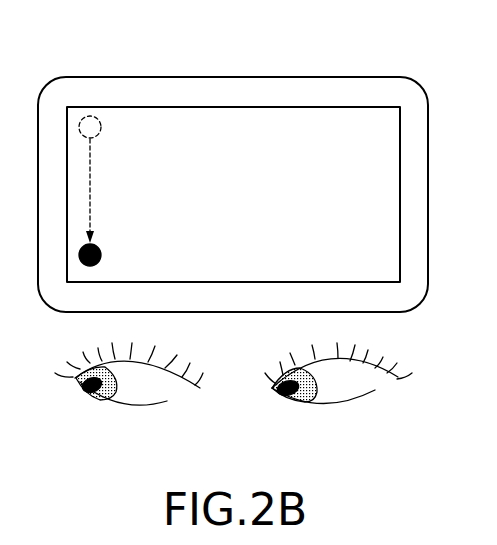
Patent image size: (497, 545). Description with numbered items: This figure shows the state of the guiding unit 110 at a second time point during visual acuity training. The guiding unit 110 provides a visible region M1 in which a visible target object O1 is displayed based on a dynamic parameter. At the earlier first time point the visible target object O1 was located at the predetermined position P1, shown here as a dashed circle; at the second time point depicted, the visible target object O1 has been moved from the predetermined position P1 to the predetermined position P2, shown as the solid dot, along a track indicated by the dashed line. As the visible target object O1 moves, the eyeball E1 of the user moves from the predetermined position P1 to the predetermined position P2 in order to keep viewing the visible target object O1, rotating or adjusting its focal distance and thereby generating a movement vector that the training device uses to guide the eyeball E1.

The guiding unit 110 is at (313, 76).
The visible region M1 is at (223, 106).
The visible target object O1 is at (81, 249).
The predetermined position P1 is at (95, 101).
The predetermined position P2 is at (118, 246).
The eyeball E1 is at (138, 399).